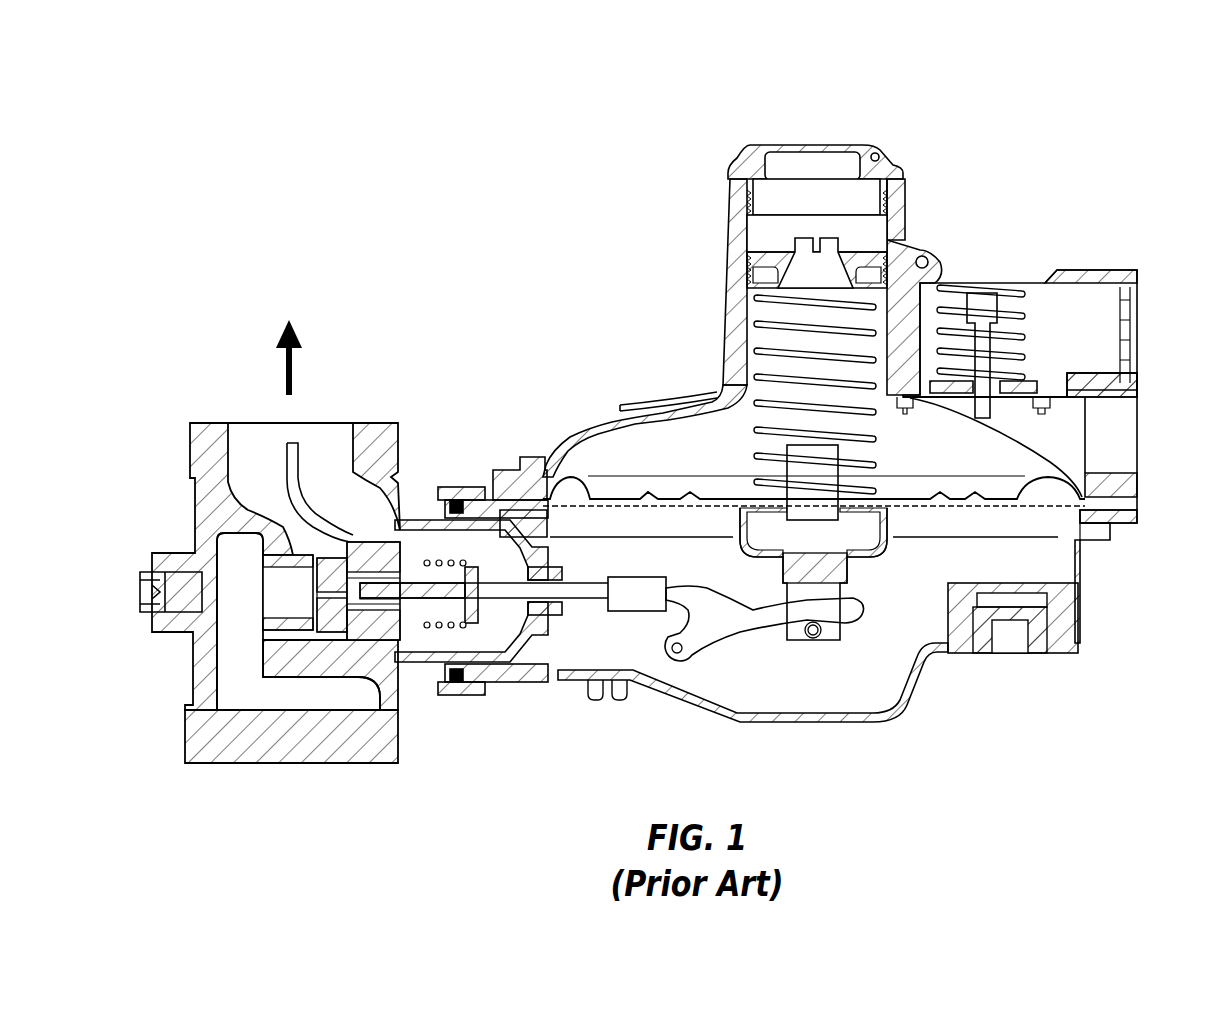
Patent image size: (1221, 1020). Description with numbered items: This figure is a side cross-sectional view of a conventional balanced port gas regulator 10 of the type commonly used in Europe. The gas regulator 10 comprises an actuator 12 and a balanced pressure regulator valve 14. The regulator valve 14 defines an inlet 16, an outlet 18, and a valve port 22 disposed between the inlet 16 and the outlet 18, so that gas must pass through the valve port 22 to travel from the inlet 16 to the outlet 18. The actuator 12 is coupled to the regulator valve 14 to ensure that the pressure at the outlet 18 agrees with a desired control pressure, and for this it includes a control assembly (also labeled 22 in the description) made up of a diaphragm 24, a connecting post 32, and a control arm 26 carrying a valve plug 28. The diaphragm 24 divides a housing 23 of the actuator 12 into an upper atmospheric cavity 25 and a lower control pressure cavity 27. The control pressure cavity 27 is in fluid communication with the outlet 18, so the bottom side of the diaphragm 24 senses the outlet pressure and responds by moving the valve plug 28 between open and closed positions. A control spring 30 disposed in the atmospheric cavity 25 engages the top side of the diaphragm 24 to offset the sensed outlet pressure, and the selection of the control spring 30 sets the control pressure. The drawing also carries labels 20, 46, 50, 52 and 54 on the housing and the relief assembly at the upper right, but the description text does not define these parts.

The gas regulator 10 is at (938, 64).
The actuator 12 is at (950, 232).
The balanced pressure regulator valve 14 is at (462, 374).
The inlet 16 is at (345, 740).
The outlet 18 is at (242, 432).
The housing / outlet body 20 is at (540, 688).
The valve port 22 is at (305, 628).
The housing 23 is at (1152, 487).
The diaphragm 24 is at (1017, 498).
The atmospheric cavity 25 is at (1033, 448).
The control arm 26 is at (765, 625).
The control pressure cavity 27 is at (1062, 540).
The valve plug 28 is at (337, 555).
The control spring 30 is at (760, 330).
The connecting post 32 is at (795, 450).
The relief valve 46 is at (1062, 295).
The diaphragm plate 50 is at (896, 545).
The relief valve disc 52 is at (1033, 383).
The relief valve stem 54 is at (1022, 292).